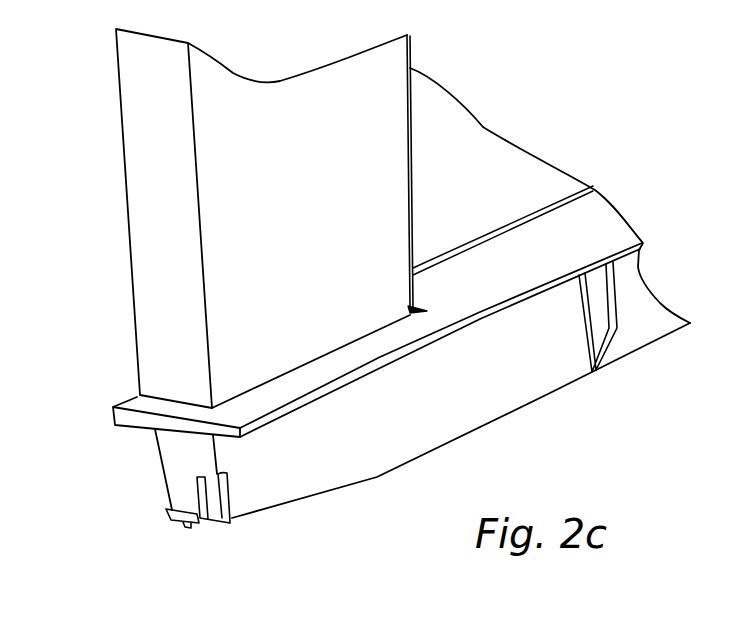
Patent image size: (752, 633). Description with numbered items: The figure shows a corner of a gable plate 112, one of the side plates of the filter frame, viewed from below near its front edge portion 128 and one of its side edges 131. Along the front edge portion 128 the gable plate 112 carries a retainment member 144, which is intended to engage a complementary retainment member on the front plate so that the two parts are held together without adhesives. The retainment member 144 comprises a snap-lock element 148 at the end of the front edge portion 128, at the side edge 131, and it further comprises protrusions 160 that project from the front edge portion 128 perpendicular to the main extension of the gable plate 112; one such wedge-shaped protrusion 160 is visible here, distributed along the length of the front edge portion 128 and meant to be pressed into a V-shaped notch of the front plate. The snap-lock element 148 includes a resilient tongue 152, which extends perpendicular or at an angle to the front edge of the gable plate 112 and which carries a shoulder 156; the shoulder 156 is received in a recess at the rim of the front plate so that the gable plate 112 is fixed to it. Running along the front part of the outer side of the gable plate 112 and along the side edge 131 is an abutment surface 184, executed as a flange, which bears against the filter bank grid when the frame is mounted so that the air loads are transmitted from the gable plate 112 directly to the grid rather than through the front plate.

The gable plate 112 is at (512, 76).
The side edge 131 is at (137, 348).
The abutment surface 184 is at (128, 402).
The front edge portion 128 is at (538, 372).
The protrusion 160 is at (610, 343).
The retainment member 144 is at (128, 480).
The snap-lock element 148 is at (177, 495).
The resilient tongue 152 is at (197, 500).
The shoulder 156 is at (183, 525).